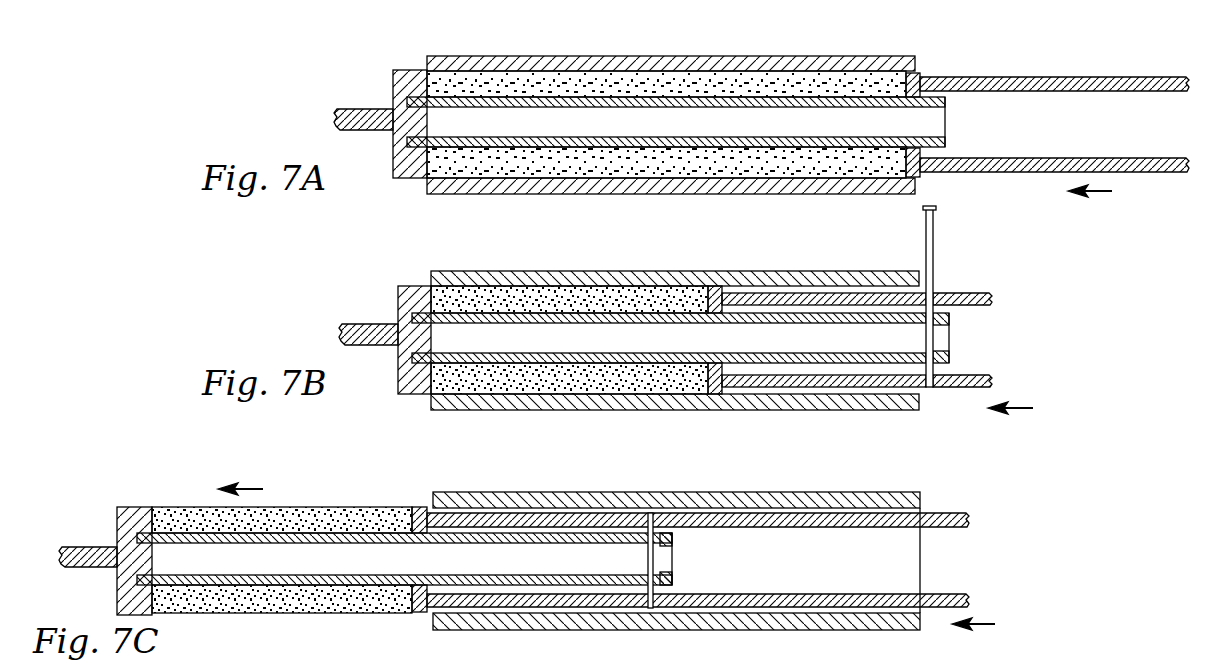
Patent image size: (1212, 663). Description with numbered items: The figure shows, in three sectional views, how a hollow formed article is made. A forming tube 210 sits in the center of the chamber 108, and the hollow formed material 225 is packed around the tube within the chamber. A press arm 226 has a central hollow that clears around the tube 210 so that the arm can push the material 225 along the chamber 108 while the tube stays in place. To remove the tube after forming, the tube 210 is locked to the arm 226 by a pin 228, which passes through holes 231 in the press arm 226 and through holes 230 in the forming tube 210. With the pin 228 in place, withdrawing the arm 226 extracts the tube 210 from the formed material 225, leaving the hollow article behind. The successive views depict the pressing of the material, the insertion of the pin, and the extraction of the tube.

In FIG. 7A, the chamber 108 is at (550, 63).
In FIG. 7A, the forming tube 210 is at (697, 107).
In FIG. 7A, the press arm 226 is at (1015, 80).
In FIG. 7B, the pin 228 is at (932, 249).
In FIG. 7B, the holes in tube 230 is at (928, 325).
In FIG. 7B, the holes in arm 231 is at (937, 385).
In FIG. 7C, the hollow formed material 225 is at (340, 522).